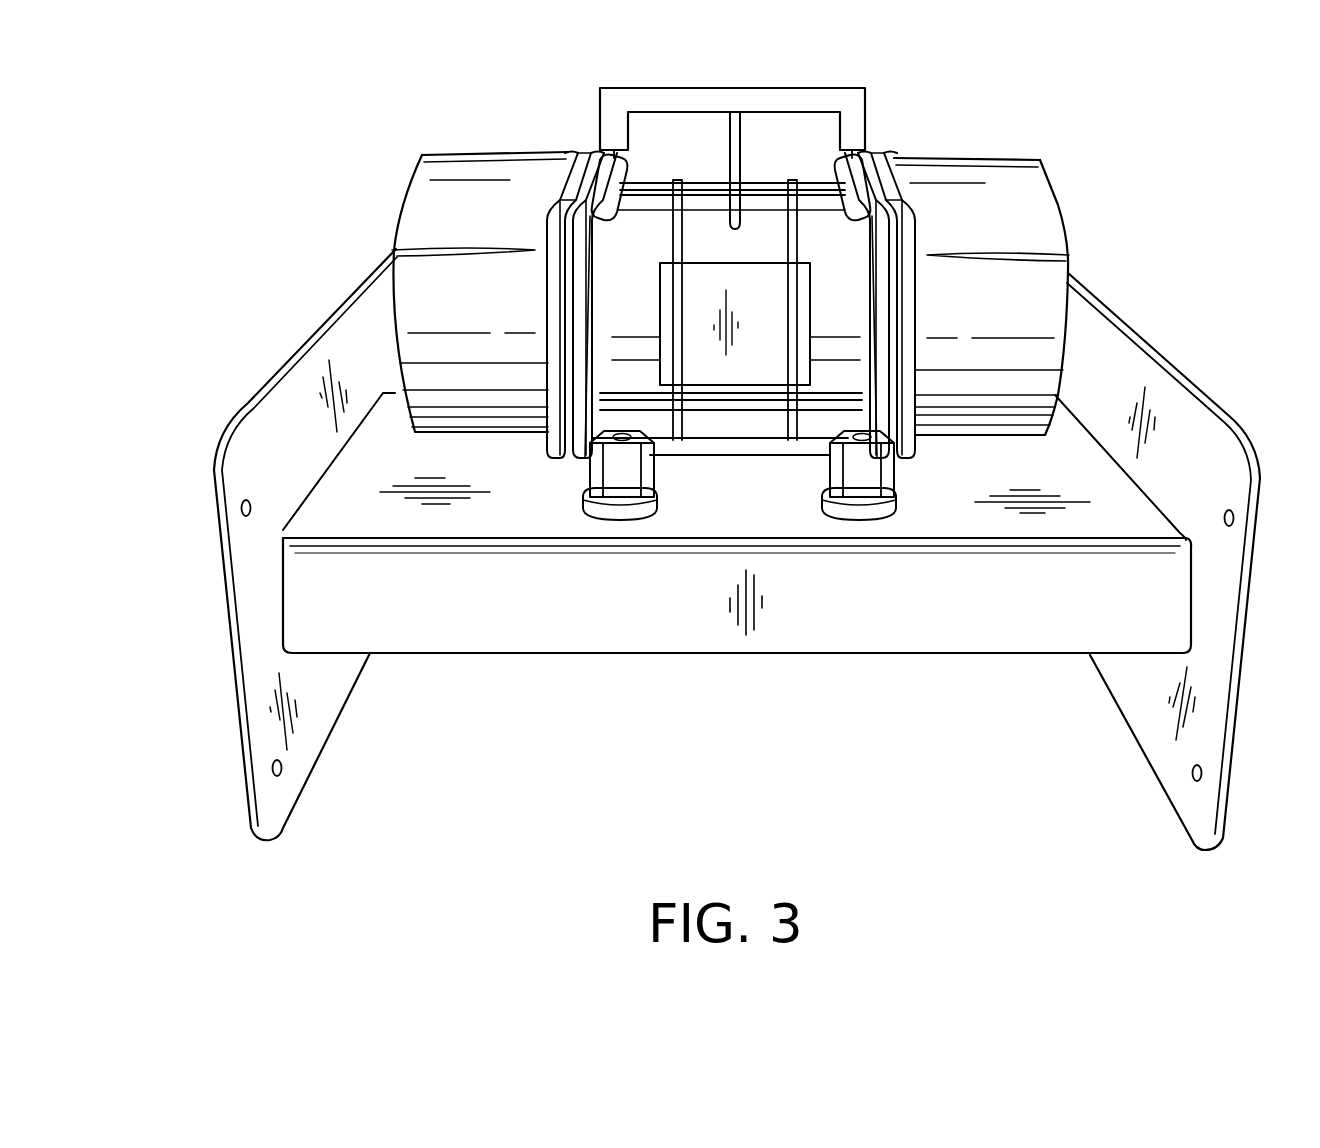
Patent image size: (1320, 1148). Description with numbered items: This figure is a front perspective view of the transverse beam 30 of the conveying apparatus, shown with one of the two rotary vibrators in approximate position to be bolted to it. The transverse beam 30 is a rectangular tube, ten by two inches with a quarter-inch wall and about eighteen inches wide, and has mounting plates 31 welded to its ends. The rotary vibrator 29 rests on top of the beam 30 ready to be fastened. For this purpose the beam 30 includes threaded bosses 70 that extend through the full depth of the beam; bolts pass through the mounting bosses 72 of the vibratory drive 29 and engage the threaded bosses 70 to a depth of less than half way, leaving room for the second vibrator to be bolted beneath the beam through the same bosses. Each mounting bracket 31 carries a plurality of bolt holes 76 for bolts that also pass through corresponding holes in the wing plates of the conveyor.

The rotary vibrator 29 is at (1010, 160).
The transverse beam 30 is at (851, 640).
The mounting plates 31 is at (262, 380).
The threaded bosses 70 is at (822, 509).
The mounting bosses 72 is at (832, 470).
The bolt holes 76 is at (241, 509).